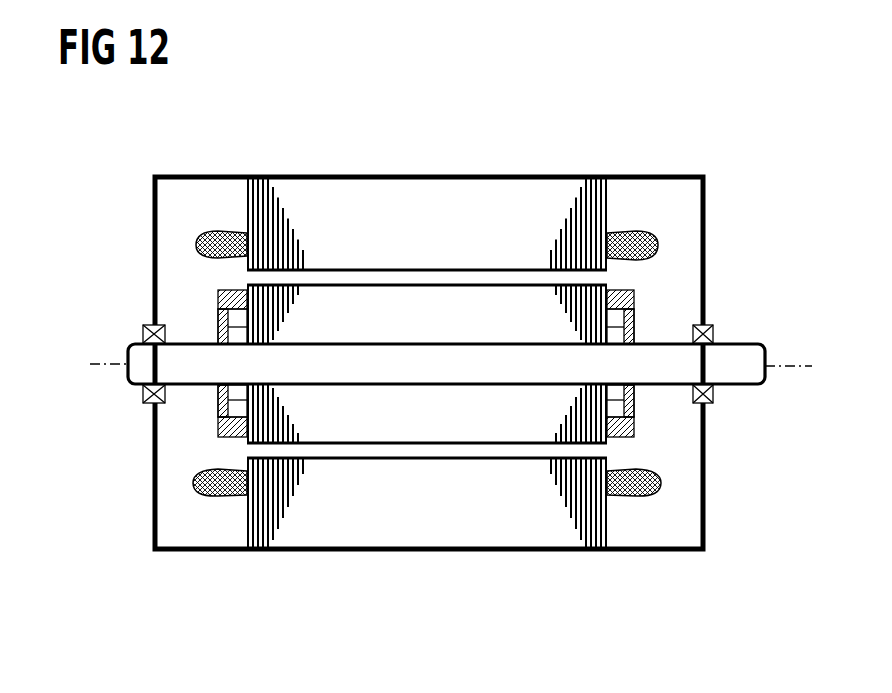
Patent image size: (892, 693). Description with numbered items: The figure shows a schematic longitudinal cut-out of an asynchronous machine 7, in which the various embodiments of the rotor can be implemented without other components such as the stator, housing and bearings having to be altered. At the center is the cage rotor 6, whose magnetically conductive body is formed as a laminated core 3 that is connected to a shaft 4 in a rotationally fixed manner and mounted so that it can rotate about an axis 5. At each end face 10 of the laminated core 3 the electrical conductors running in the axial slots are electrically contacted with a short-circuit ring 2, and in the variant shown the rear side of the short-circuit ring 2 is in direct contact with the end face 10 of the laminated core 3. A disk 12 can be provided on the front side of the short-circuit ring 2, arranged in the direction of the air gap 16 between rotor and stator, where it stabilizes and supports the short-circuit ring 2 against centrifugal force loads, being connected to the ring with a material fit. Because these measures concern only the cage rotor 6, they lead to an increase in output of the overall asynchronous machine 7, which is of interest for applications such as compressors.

The short-circuit ring 2 is at (214, 298).
The laminated core 3 is at (348, 427).
The shaft 4 is at (734, 377).
The axis 5 is at (800, 368).
The cage rotor 6 is at (442, 418).
The asynchronous machine 7 is at (531, 149).
The end face 10 is at (218, 326).
The disk 12 is at (218, 402).
The air gap 16 is at (590, 451).